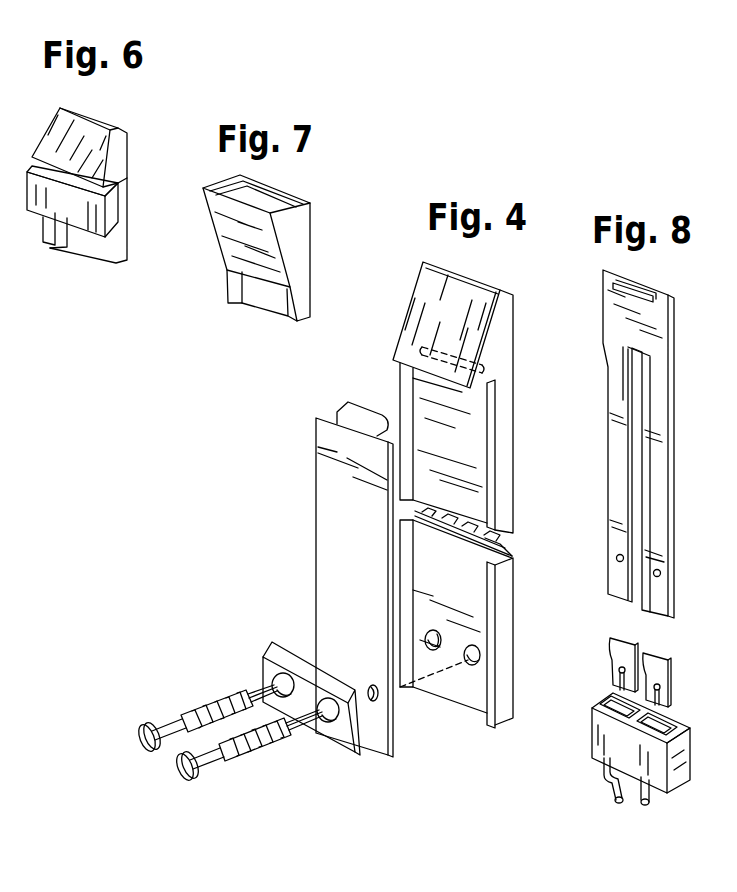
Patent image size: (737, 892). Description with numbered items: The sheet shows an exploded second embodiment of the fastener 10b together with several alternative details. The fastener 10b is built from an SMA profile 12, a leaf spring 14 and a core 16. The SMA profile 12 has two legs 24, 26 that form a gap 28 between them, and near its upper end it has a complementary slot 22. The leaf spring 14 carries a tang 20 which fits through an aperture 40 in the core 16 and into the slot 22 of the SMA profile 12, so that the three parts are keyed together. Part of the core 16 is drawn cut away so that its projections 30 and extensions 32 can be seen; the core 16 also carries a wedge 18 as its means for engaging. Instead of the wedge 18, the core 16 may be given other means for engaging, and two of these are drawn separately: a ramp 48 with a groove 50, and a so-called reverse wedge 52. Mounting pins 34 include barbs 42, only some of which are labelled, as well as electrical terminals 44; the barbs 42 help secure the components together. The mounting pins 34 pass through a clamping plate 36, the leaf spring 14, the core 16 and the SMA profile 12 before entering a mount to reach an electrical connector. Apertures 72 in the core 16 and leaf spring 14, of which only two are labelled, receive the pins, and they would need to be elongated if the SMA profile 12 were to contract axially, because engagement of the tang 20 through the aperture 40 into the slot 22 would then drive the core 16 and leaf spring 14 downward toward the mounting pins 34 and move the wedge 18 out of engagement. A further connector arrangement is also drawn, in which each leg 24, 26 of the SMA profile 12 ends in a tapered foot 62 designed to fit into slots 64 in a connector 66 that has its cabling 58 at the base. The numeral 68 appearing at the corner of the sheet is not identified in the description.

In FIG. 4, the fastener 10b is at (165, 436).
In FIG. 8, the SMA profile 12 is at (660, 328).
In FIG. 4, the leaf spring 14 is at (327, 472).
In FIG. 4, the core 16 is at (430, 583).
In FIG. 4, the wedge 18 is at (455, 292).
In FIG. 4, the tang 20 is at (345, 413).
In FIG. 8, the slot 22 is at (637, 290).
In FIG. 8, the leg 24 is at (622, 583).
In FIG. 8, the leg 26 is at (653, 597).
In FIG. 8, the gap 28 is at (643, 405).
In FIG. 4, the projections 30 is at (490, 538).
In FIG. 4, the extensions 32 is at (430, 512).
In FIG. 4, the mounting pins 34 is at (138, 738).
In FIG. 4, the clamping plate 36 is at (270, 643).
In FIG. 4, the aperture 40 is at (478, 372).
In FIG. 4, the barbs 42 is at (190, 717).
In FIG. 4, the electrical terminals 44 is at (328, 733).
In FIG. 6, the ramp 48 is at (85, 137).
In FIG. 6, the groove 50 is at (80, 192).
In FIG. 7, the reverse wedge 52 is at (300, 238).
In FIG. 8, the cabling 58 is at (603, 772).
In FIG. 8, the tapered foot 62 is at (612, 670).
In FIG. 8, the slots 64 is at (603, 700).
In FIG. 8, the connector 66 is at (617, 748).
In FIG. 8, the sheet label 68 is at (723, 45).
In FIG. 4, the apertures 72 is at (468, 664).